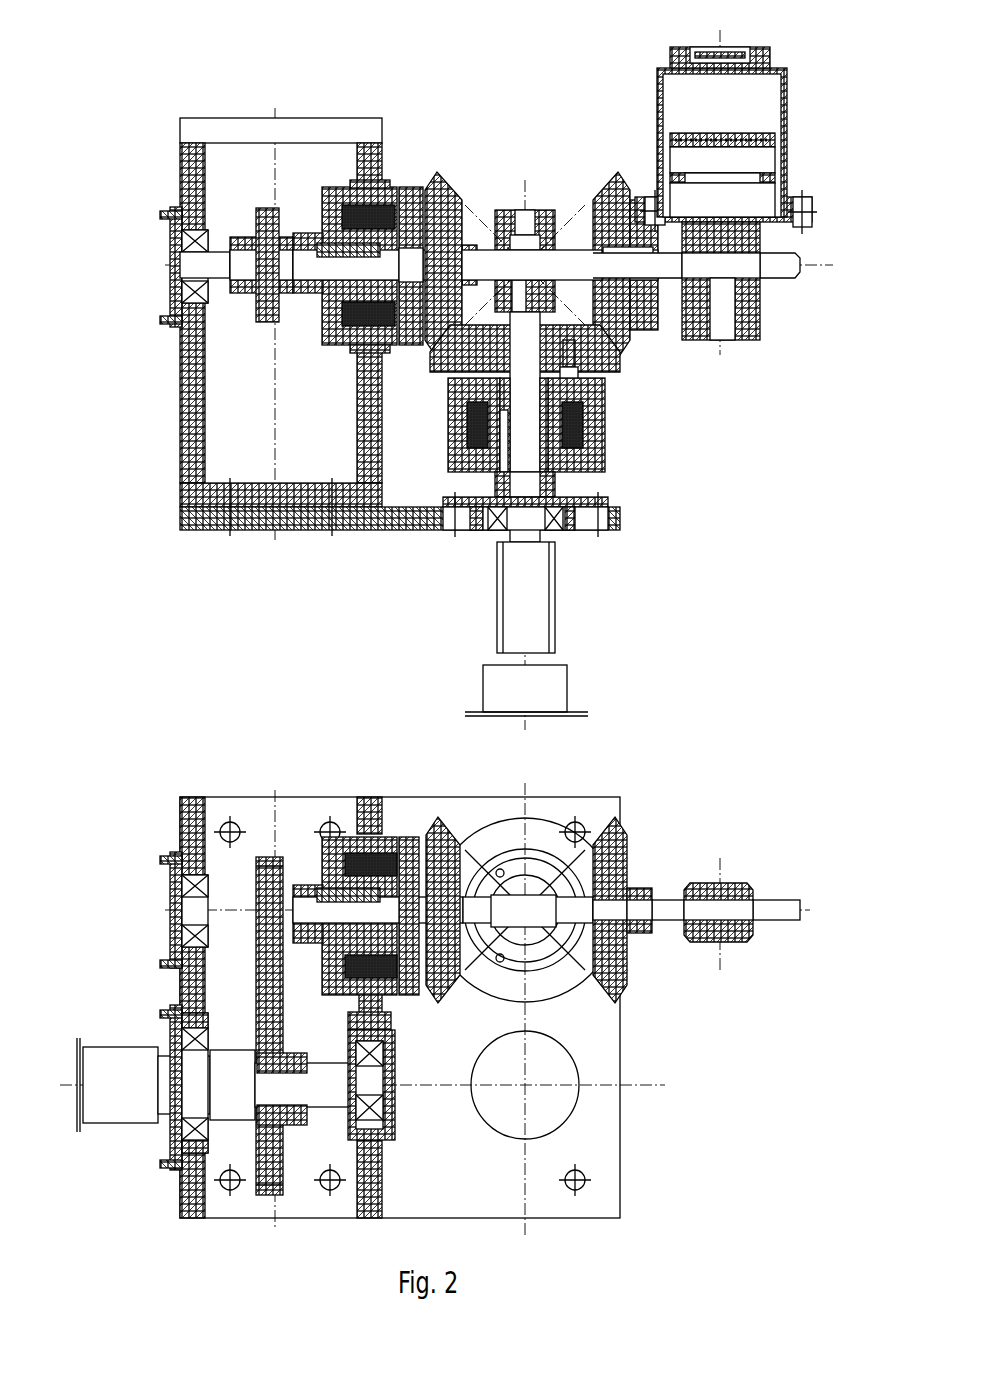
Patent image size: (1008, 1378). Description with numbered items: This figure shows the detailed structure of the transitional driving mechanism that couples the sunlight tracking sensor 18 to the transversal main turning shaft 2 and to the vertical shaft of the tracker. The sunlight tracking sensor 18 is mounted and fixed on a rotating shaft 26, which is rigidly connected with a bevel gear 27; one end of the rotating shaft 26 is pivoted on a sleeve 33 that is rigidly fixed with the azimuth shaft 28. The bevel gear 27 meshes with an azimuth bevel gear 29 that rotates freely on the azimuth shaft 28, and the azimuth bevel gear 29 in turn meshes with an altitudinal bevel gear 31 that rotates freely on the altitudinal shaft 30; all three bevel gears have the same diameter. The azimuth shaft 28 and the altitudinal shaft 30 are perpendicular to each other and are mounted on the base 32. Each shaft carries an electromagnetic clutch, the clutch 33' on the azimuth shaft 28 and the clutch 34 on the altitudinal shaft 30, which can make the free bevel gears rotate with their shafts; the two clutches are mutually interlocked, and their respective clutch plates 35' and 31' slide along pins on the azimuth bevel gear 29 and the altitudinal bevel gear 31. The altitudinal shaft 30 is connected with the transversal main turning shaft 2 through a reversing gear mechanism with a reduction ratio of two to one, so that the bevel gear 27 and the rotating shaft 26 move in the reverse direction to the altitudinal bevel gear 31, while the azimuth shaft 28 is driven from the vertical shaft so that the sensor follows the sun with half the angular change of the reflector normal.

The transversal main turning shaft 2 is at (117, 1098).
The sunlight tracking sensor 18 is at (785, 102).
The rotating shaft 26 is at (767, 260).
The bevel gear 27 is at (610, 327).
The azimuth shaft 28 is at (532, 552).
The azimuth bevel gear 29 is at (495, 355).
The altitudinal shaft 30 is at (305, 260).
The altitudinal bevel gear 31 is at (463, 236).
The clutch plate 31' is at (439, 197).
The base 32 is at (498, 1180).
The sleeve 33 is at (525, 215).
The electromagnetic clutch 33' is at (656, 425).
The electromagnetic clutch 34 is at (325, 312).
The clutch plate 35' is at (712, 346).